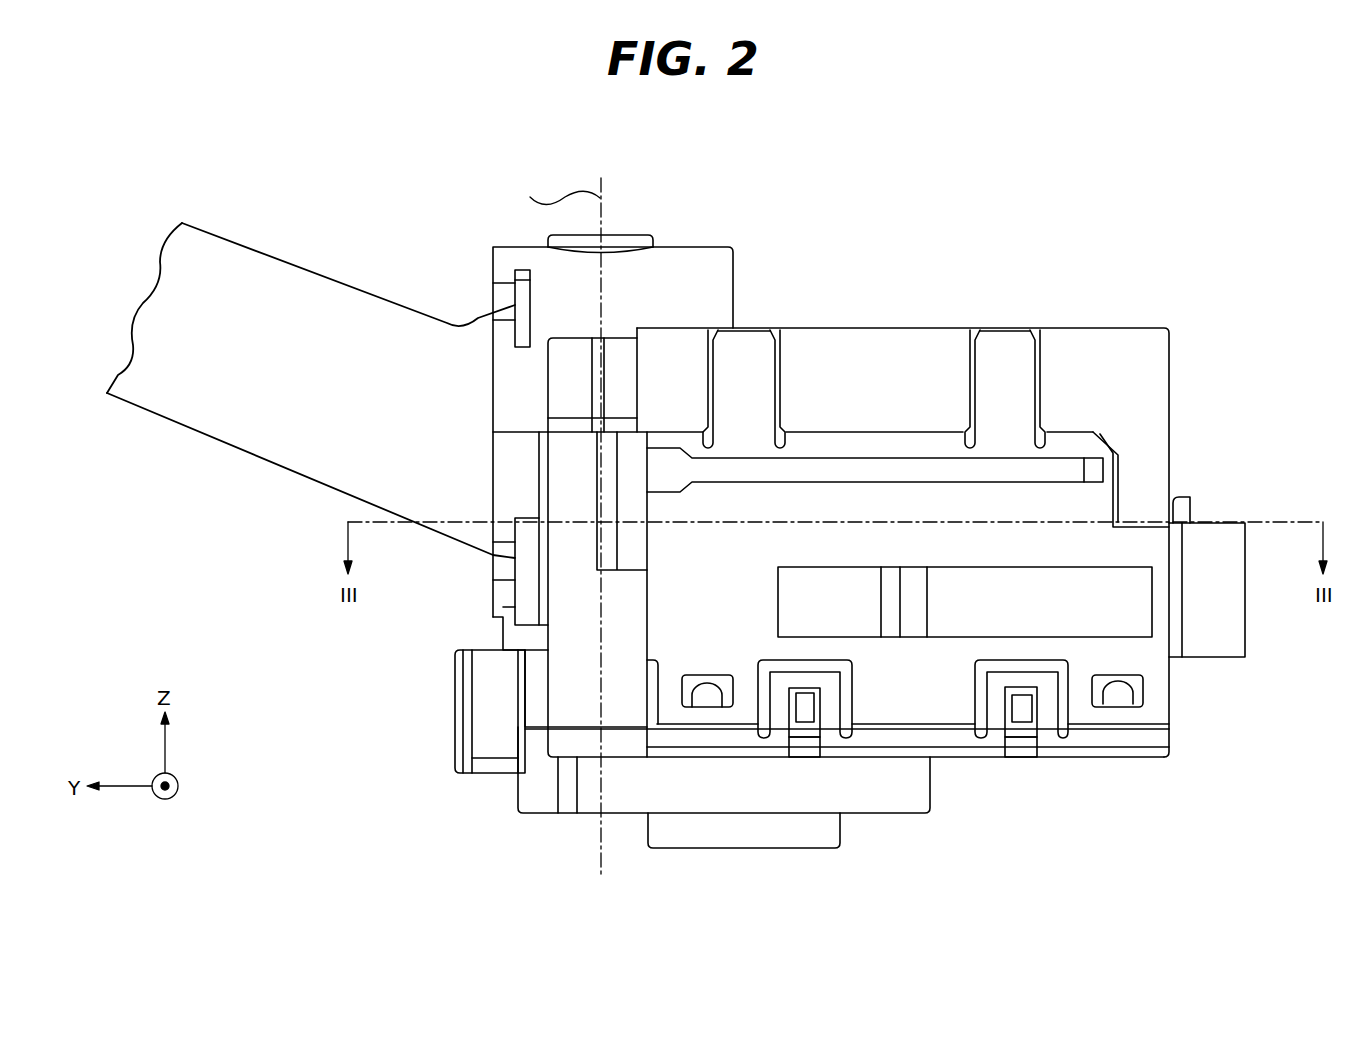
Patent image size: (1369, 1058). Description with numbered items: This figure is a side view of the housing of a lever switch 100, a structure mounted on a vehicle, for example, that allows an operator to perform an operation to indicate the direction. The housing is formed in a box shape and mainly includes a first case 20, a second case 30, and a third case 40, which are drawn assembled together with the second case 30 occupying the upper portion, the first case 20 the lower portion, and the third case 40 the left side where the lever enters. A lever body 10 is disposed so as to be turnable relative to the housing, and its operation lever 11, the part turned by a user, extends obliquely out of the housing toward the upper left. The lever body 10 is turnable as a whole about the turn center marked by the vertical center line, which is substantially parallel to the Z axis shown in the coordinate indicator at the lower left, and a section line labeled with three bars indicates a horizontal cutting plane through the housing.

The lever switch 100 is at (623, 149).
The lever body 10 is at (357, 280).
The operation lever 11 is at (272, 257).
The first case 20 is at (778, 727).
The second case 30 is at (877, 327).
The third case 40 is at (673, 630).